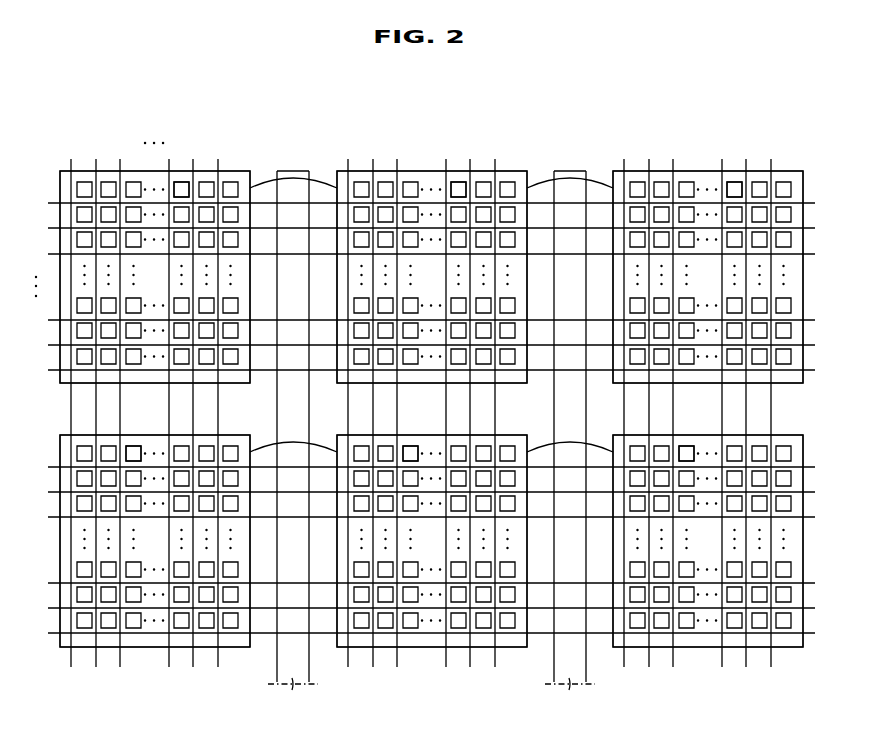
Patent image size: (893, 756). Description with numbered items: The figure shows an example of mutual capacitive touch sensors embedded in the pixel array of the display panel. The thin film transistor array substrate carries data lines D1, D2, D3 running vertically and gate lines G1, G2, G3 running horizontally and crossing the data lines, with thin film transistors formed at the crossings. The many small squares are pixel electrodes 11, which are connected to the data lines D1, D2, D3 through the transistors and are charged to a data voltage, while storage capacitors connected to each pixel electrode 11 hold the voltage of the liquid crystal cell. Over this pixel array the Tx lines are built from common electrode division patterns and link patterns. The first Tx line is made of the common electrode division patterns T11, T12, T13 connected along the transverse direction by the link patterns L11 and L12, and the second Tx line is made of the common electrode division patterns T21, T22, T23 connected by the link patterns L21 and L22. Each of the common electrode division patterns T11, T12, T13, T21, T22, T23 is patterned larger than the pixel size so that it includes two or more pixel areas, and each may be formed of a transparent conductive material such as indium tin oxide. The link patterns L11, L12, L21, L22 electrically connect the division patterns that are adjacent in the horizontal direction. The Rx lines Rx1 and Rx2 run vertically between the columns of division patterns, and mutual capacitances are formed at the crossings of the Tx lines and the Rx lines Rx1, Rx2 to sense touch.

The pixel electrode 11 is at (182, 181).
The common electrode division pattern T11 is at (233, 170).
The common electrode division pattern T12 is at (510, 170).
The common electrode division pattern T13 is at (785, 170).
The common electrode division pattern T21 is at (238, 434).
The common electrode division pattern T22 is at (515, 434).
The common electrode division pattern T23 is at (791, 434).
The link pattern L11 is at (293, 177).
The link pattern L12 is at (570, 177).
The link pattern L21 is at (293, 441).
The link pattern L22 is at (570, 441).
The data line D1 is at (71, 401).
The data line D2 is at (96, 401).
The data line D3 is at (121, 401).
The gate line G1 is at (421, 204).
The gate line G2 is at (421, 229).
The gate line G3 is at (421, 255).
The Rx line Rx1 is at (295, 696).
The Rx line Rx2 is at (572, 696).